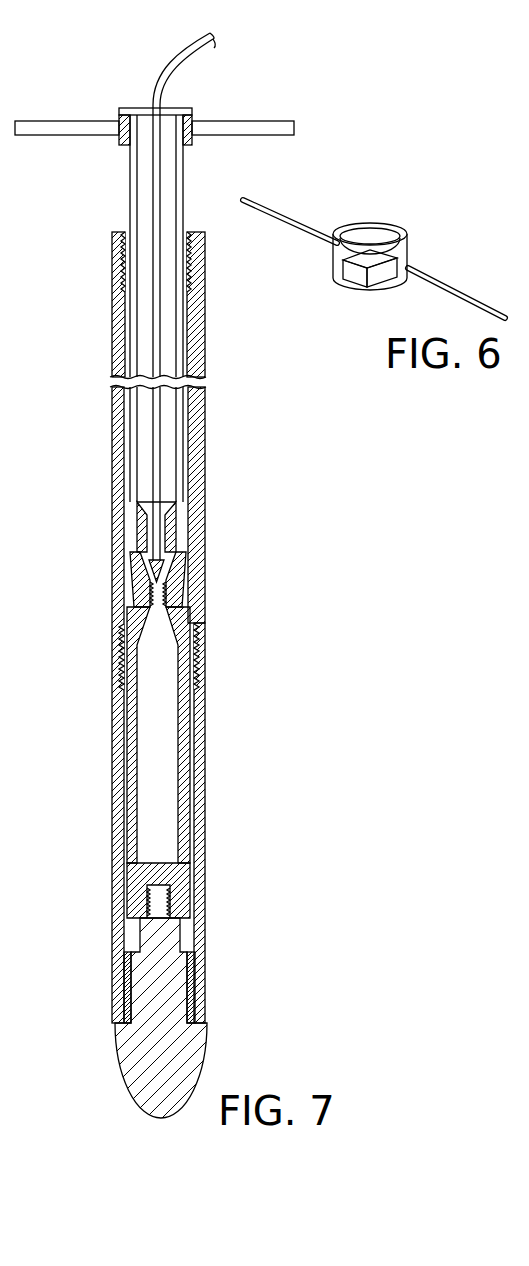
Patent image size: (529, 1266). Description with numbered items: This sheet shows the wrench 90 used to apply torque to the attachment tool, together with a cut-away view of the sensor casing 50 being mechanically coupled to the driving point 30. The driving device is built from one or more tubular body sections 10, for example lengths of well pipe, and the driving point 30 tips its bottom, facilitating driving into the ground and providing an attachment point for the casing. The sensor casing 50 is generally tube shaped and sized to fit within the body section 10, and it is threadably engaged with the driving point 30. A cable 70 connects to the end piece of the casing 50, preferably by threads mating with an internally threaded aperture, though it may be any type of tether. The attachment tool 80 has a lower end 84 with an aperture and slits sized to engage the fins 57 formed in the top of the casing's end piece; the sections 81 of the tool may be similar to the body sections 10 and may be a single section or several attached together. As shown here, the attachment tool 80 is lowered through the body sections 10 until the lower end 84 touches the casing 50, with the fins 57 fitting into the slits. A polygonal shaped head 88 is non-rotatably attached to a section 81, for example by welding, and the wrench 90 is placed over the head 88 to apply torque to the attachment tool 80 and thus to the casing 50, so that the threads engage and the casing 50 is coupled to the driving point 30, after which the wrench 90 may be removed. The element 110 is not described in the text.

In FIG. 7, the tubular body section 10 is at (112, 762).
In FIG. 7, the driving point 30 is at (118, 1073).
In FIG. 7, the sensor casing 50 is at (188, 733).
In FIG. 7, the fins 57 is at (185, 578).
In FIG. 7, the cable 70 is at (157, 78).
In FIG. 7, the attachment tool 80 is at (128, 197).
In FIG. 7, the sections 81 is at (183, 433).
In FIG. 7, the lower end 84 is at (178, 533).
In FIG. 7, the polygonal shaped head 88 is at (188, 115).
In FIG. 7, the wrench 90 is at (100, 103).
In FIG. 6, the wrench 90 is at (420, 243).
In FIG. 7, the threaded sleeve 110 is at (205, 348).